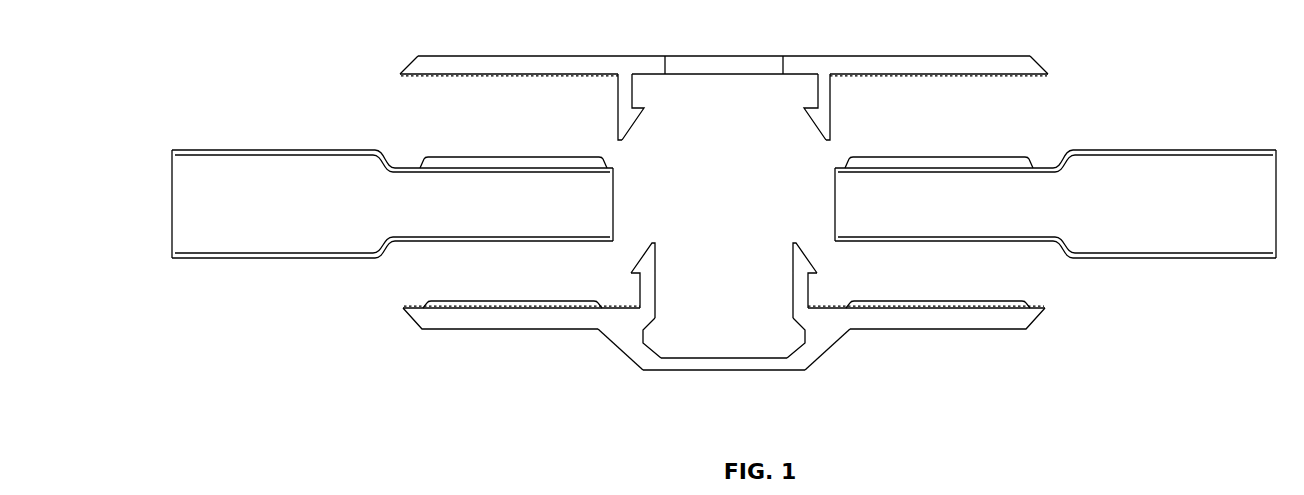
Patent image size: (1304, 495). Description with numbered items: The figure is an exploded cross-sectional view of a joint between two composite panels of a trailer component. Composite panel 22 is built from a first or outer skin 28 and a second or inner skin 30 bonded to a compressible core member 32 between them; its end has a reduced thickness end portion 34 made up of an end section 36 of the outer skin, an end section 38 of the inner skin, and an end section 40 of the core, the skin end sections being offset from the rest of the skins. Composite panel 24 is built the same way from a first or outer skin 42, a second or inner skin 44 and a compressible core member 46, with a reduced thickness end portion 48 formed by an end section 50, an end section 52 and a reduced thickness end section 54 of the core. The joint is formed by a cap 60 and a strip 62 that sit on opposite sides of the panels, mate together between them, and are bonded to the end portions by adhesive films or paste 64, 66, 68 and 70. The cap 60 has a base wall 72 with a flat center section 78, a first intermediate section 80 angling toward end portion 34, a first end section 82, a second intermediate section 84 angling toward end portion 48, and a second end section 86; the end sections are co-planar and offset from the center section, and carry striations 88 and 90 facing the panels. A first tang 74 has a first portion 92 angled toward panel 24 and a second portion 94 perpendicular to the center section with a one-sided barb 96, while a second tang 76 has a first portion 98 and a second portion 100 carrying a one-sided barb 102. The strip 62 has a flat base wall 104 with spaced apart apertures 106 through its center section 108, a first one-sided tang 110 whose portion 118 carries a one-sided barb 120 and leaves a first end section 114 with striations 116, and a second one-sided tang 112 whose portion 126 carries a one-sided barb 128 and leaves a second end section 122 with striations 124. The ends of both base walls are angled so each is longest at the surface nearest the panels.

The composite panel 22 is at (416, 198).
The composite panel 24 is at (1033, 208).
The first or outer skin 28 is at (210, 259).
The second or inner skin 30 is at (262, 149).
The compressible core member 32 is at (268, 250).
The reduced thickness end portion 34 is at (427, 214).
The end section 36 is at (455, 242).
The end section 38 is at (441, 169).
The end section 40 is at (605, 205).
The first or outer skin 42 is at (1139, 258).
The second or inner skin 44 is at (1241, 149).
The compressible core member 46 is at (1243, 250).
The reduced thickness end portion 48 is at (1023, 220).
The end section 50 is at (910, 242).
The end section 52 is at (932, 169).
The reduced thickness end section 54 is at (842, 186).
The cap 60 is at (724, 317).
The strip 62 is at (736, 82).
The adhesive film or paste 64 is at (481, 305).
The adhesive film or paste 66 is at (981, 303).
The adhesive film or paste 68 is at (556, 158).
The adhesive film or paste 70 is at (868, 158).
The base wall 72 is at (724, 398).
The first tang 74 is at (655, 295).
The second tang 76 is at (806, 277).
The center section 78 is at (718, 372).
The first intermediate section 80 is at (633, 350).
The first end section 82 is at (540, 322).
The second intermediate section 84 is at (812, 352).
The second end section 86 is at (952, 320).
The striations 88 is at (509, 306).
The striations 90 is at (916, 306).
The first portion 92 is at (641, 320).
The second portion 94 is at (640, 296).
The one-sided barb 96 is at (654, 260).
The first portion 98 is at (798, 318).
The second portion 100 is at (810, 298).
The one-sided barb 102 is at (794, 250).
The flat base wall 104 is at (746, 66).
The spaced apart apertures 106 is at (665, 62).
The center section 108 is at (645, 72).
The first one-sided tang 110 is at (611, 88).
The second one-sided tang 112 is at (842, 88).
The first end section 114 is at (472, 56).
The striations 116 is at (442, 76).
The portion 118 is at (619, 98).
The one-sided barb 120 is at (627, 120).
The second end section 122 is at (946, 56).
The striations 124 is at (1031, 76).
The portion 126 is at (818, 75).
The one-sided barb 128 is at (822, 118).